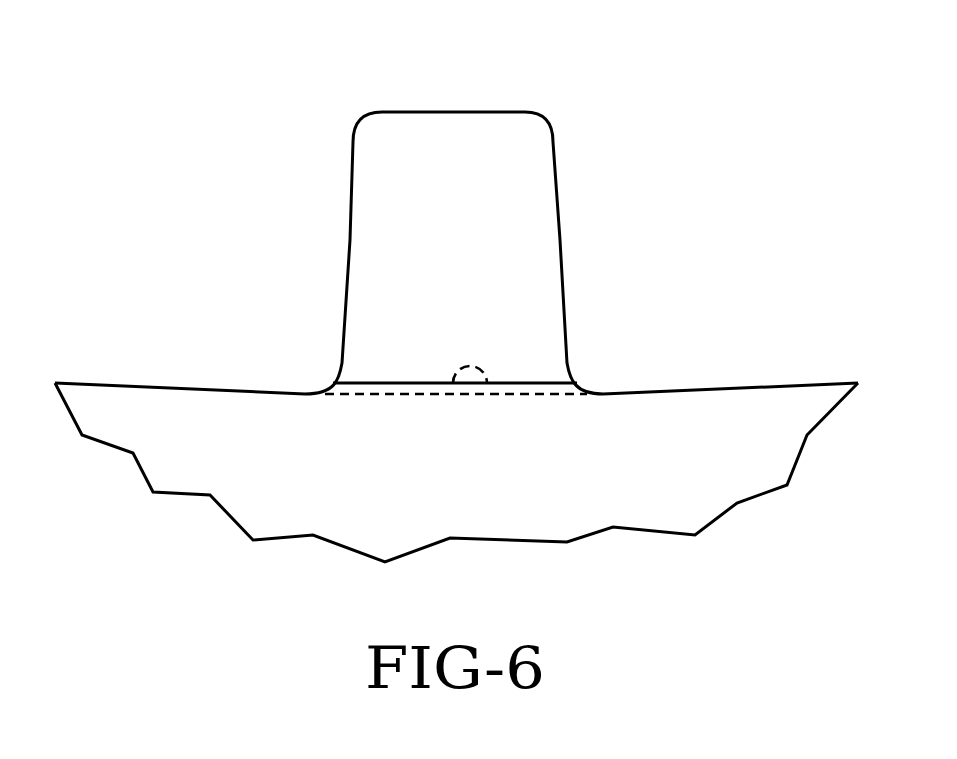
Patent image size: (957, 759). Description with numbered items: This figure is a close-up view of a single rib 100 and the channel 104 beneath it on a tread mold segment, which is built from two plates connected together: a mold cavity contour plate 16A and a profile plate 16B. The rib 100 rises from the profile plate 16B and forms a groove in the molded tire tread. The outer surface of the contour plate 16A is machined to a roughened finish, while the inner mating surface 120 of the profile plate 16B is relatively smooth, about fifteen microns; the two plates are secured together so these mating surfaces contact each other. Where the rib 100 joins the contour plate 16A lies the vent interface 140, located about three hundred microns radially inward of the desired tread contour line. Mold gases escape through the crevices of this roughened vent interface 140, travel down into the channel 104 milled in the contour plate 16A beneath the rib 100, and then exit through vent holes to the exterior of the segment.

The rib 100 is at (447, 155).
The mold cavity contour plate 16A is at (706, 477).
The profile plate 16B is at (481, 236).
The channel 104 is at (452, 386).
The inner mating surface 120 is at (377, 383).
The vent interface 140 is at (538, 383).